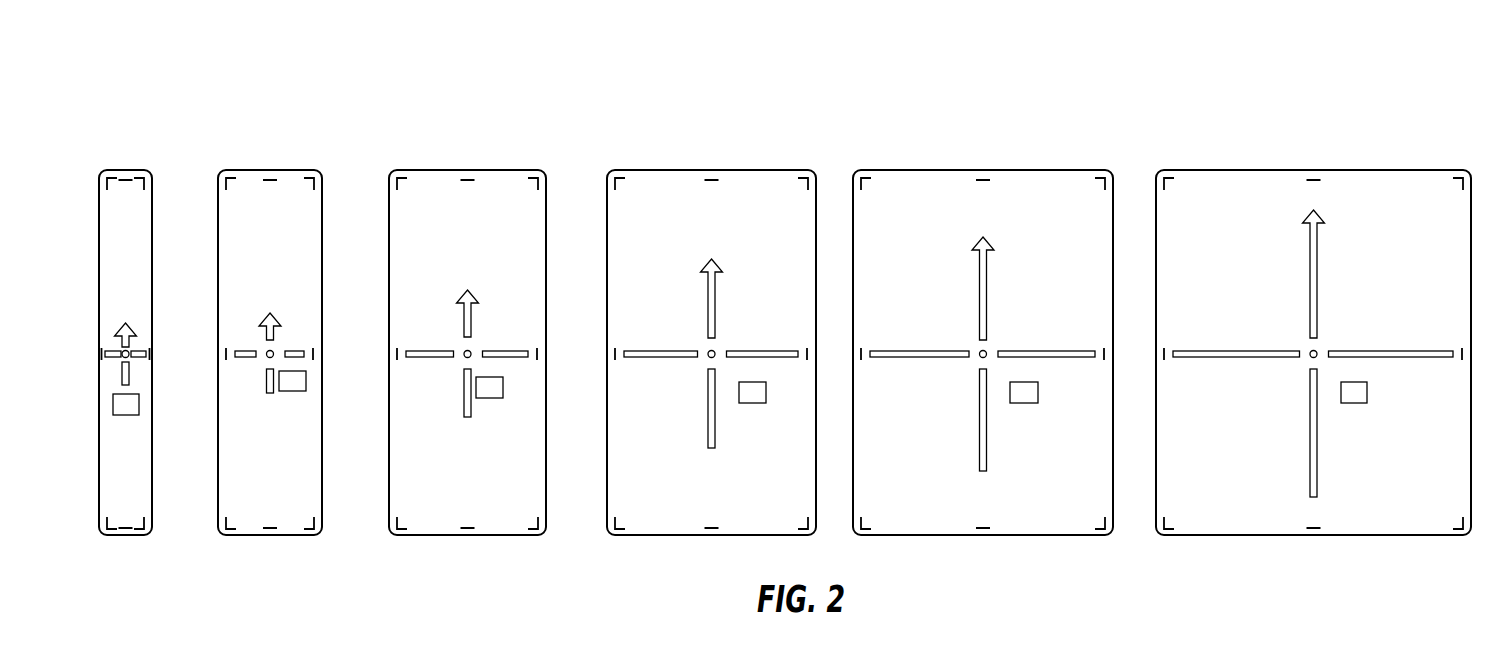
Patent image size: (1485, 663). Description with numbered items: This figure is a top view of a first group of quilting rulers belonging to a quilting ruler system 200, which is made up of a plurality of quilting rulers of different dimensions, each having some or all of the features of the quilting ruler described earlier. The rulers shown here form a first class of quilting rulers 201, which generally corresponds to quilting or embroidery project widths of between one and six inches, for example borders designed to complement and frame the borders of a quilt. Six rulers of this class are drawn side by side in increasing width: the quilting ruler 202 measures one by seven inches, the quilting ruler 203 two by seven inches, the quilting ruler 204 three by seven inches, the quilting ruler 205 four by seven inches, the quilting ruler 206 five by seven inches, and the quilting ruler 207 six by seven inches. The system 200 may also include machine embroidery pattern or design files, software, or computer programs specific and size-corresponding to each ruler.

The system 200 is at (1403, 72).
The first class of quilting rulers 201 is at (1470, 158).
The quilting ruler 202 is at (125, 527).
The quilting ruler 203 is at (292, 527).
The quilting ruler 204 is at (500, 527).
The quilting ruler 205 is at (759, 527).
The quilting ruler 206 is at (1037, 527).
The quilting ruler 207 is at (1383, 527).